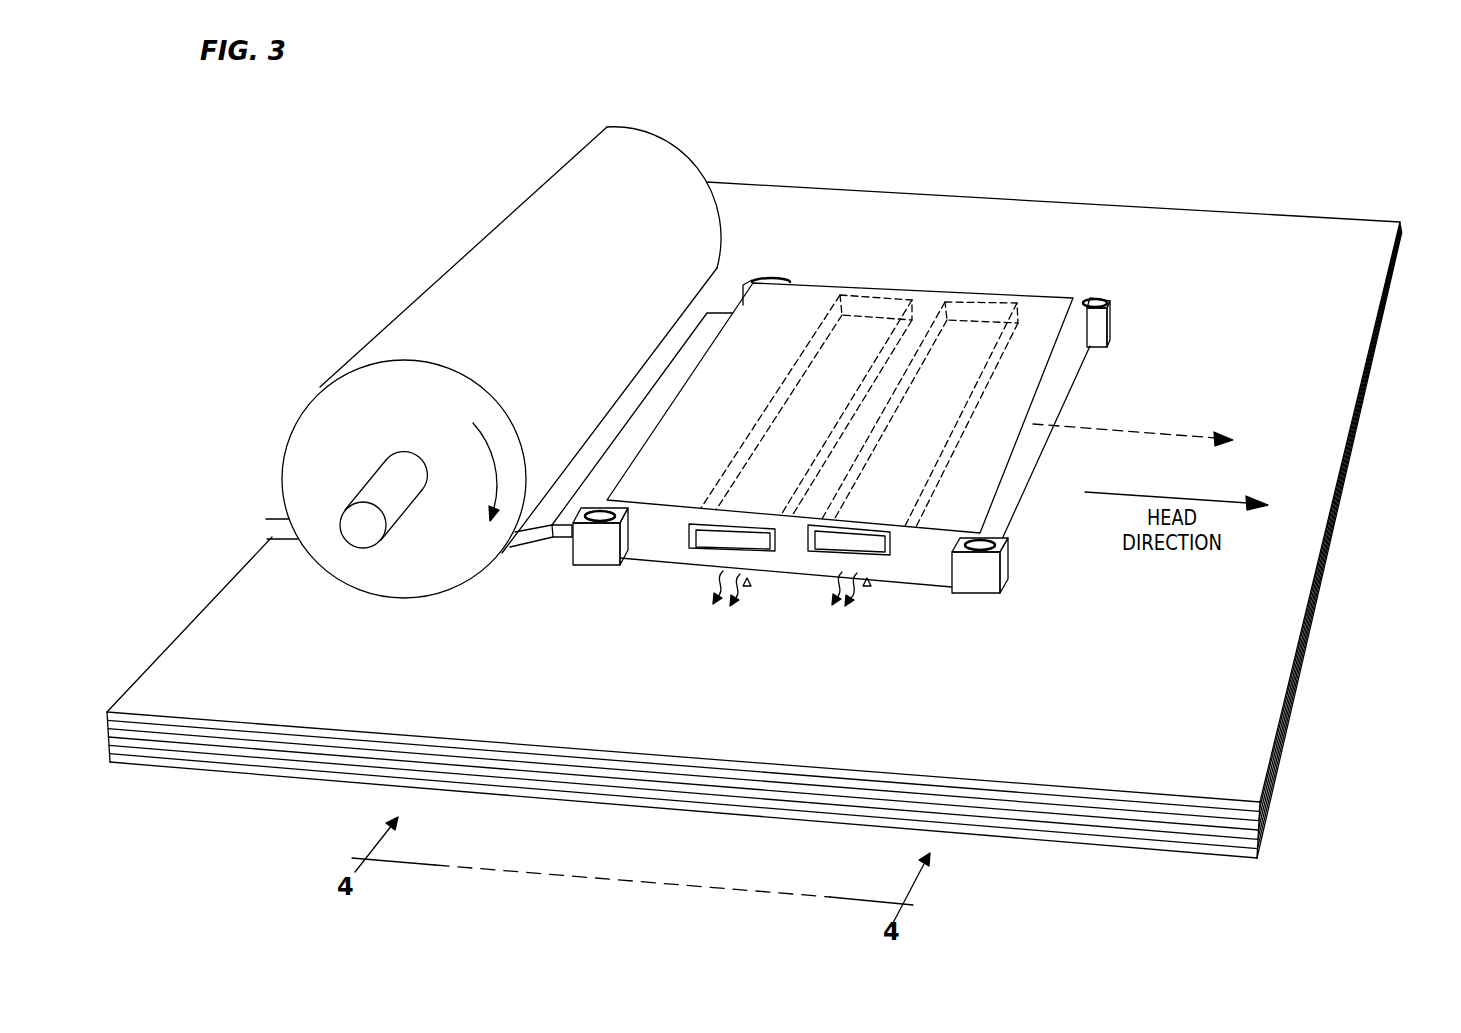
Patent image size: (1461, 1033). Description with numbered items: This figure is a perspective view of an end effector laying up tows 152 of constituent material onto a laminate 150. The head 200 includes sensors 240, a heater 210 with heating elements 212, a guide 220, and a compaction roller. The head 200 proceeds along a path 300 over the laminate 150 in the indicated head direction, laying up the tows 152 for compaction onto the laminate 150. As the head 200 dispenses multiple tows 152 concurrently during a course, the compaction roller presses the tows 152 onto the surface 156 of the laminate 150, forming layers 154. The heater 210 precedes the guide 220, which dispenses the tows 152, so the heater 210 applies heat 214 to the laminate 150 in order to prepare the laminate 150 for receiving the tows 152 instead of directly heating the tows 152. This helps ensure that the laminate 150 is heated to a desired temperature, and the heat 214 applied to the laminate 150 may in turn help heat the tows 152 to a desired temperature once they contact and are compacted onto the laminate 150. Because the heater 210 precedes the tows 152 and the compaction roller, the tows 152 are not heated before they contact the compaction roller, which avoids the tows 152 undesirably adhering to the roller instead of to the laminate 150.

The laminate 150 is at (1236, 153).
The tows 152 is at (284, 531).
The layers 154 is at (98, 723).
The surface 156 is at (1332, 326).
The head 200 is at (1120, 137).
The heater 210 is at (1108, 270).
The heating elements 212 is at (727, 536).
The heat 214 is at (741, 575).
The guide 220 is at (556, 531).
The sensors 240 is at (1112, 312).
The path 300 is at (1153, 430).